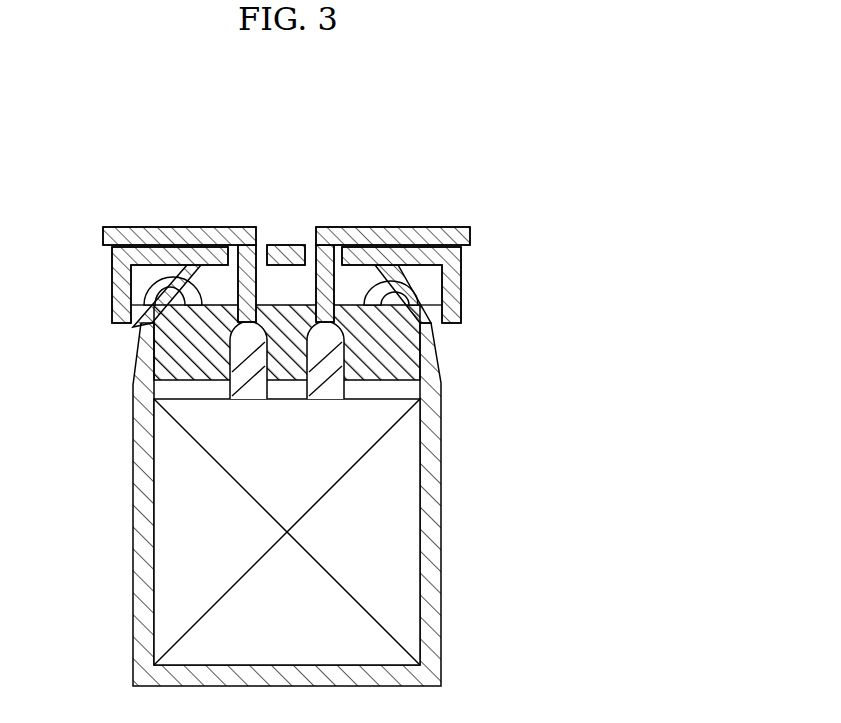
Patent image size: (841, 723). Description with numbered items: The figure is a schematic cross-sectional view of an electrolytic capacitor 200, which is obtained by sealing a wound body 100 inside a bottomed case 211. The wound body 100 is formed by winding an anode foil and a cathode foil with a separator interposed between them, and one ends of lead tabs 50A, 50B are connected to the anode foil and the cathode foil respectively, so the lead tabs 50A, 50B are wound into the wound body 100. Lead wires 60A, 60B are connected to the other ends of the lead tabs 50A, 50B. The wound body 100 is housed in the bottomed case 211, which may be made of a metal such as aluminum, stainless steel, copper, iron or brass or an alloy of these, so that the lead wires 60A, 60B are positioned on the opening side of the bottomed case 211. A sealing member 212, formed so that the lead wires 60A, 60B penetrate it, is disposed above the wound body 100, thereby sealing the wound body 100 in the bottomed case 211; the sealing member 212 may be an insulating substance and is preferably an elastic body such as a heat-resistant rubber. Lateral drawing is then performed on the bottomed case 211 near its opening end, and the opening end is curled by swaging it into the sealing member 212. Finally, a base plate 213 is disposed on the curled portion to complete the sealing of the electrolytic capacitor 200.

The electrolytic capacitor 200 is at (355, 128).
The bottomed case 211 is at (433, 482).
The sealing member 212 is at (420, 343).
The base plate 213 is at (282, 244).
The wound body 100 is at (188, 513).
The lead tab 50A is at (250, 352).
The lead tab 50B is at (322, 373).
The lead wire 60A is at (178, 227).
The lead wire 60B is at (400, 227).